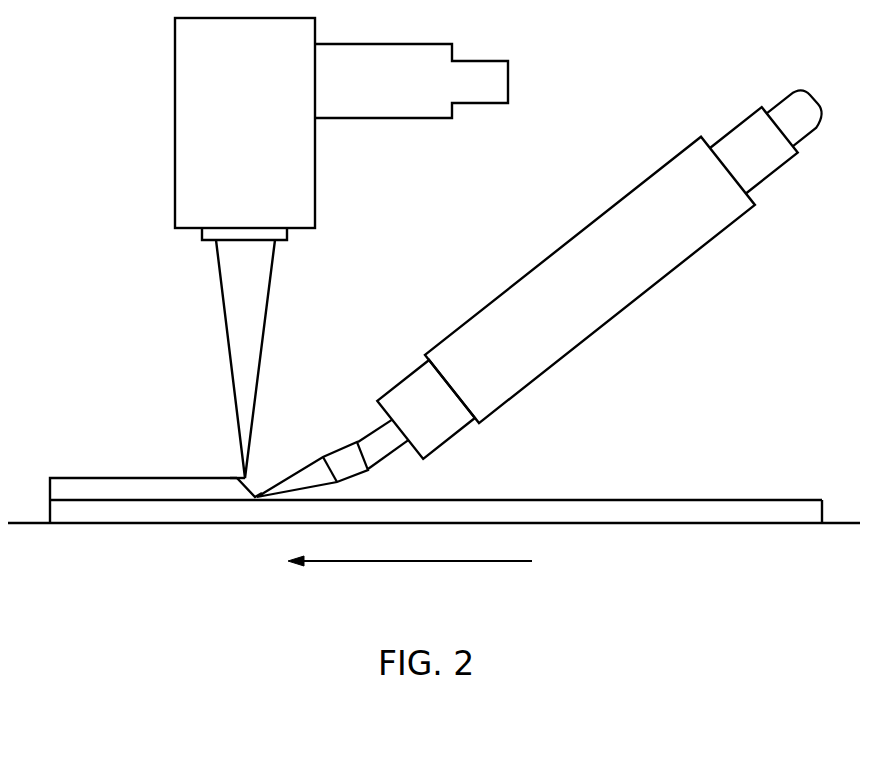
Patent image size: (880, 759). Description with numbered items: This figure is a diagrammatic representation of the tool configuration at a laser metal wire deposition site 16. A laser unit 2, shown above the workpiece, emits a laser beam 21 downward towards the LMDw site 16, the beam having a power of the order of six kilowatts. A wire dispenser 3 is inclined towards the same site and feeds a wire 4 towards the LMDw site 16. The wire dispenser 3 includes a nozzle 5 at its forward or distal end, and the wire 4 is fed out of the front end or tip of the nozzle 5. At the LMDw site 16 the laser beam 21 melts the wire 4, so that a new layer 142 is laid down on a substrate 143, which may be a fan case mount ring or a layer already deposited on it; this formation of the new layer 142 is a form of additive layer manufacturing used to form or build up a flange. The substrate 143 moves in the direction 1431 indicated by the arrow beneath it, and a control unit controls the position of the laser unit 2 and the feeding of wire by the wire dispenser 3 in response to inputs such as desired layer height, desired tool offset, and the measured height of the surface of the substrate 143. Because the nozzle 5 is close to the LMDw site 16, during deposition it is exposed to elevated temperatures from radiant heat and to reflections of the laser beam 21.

The laser unit 2 is at (175, 62).
The laser beam 21 is at (229, 352).
The wire dispenser 3 is at (540, 263).
The nozzle 5 is at (308, 468).
The wire 4 is at (263, 492).
The laser metal wire deposition site 16 is at (228, 460).
The new layer 142 is at (75, 477).
The substrate 143 is at (110, 513).
The direction 1431 is at (400, 563).